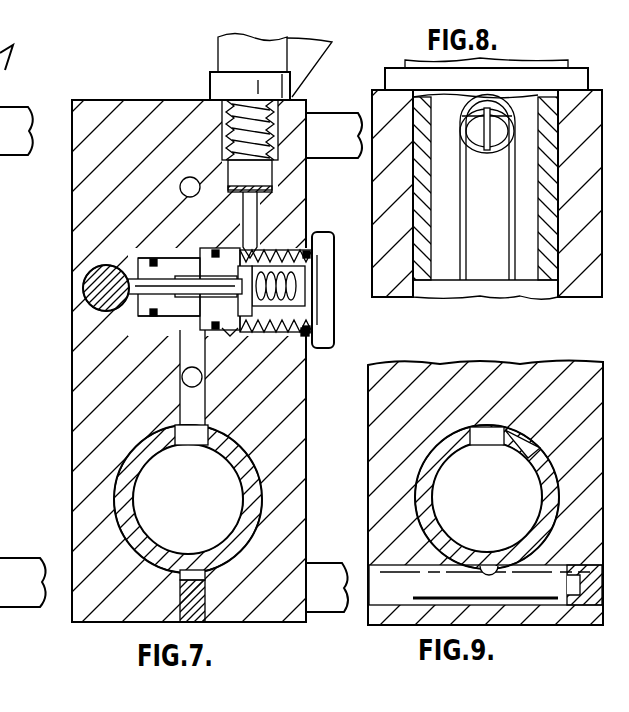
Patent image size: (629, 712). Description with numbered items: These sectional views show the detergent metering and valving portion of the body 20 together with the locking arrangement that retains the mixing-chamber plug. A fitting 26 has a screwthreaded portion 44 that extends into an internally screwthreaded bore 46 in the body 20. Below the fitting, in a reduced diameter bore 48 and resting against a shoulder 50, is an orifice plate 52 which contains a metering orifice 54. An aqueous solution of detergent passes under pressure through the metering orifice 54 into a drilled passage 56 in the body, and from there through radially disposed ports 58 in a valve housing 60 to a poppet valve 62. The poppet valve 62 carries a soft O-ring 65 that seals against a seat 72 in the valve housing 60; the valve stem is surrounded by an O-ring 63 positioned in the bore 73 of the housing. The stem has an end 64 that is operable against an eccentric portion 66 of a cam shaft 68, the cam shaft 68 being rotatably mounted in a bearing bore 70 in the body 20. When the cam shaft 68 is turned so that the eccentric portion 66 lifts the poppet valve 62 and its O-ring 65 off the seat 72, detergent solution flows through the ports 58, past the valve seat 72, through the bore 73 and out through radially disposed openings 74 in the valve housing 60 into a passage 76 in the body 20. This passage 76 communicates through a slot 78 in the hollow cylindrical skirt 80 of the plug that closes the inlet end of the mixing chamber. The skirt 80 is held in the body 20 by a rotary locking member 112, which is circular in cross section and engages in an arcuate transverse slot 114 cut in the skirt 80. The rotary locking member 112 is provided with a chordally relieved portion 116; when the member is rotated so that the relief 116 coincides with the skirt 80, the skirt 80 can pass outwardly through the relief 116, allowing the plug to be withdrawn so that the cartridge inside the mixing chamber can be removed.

In FIG. 7, the body 20 is at (70, 379).
In FIG. 8, the body 20 is at (530, 287).
In FIG. 7, the fitting 26 is at (212, 83).
In FIG. 7, the screwthreaded portion 44 is at (228, 132).
In FIG. 7, the internally screwthreaded bore 46 is at (270, 152).
In FIG. 7, the reduced diameter bore 48 is at (272, 184).
In FIG. 7, the shoulder 50 is at (215, 230).
In FIG. 7, the orifice plate 52 is at (258, 215).
In FIG. 7, the metering orifice 54 is at (232, 250).
In FIG. 7, the drilled passage 56 is at (252, 266).
In FIG. 7, the ports 58 is at (260, 335).
In FIG. 7, the valve housing 60 is at (328, 334).
In FIG. 7, the poppet valve 62 is at (232, 336).
In FIG. 7, the O-ring 63 is at (172, 318).
In FIG. 7, the end 64 is at (178, 279).
In FIG. 7, the soft O-ring 65 is at (306, 340).
In FIG. 7, the eccentric portion 66 is at (96, 306).
In FIG. 7, the cam shaft 68 is at (88, 296).
In FIG. 7, the bearing bore 70 is at (92, 270).
In FIG. 7, the seat 72 is at (200, 258).
In FIG. 7, the bore 73 is at (326, 280).
In FIG. 7, the radially disposed openings 74 is at (178, 315).
In FIG. 7, the passage 76 is at (208, 420).
In FIG. 7, the slot 78 is at (190, 440).
In FIG. 9, the slot 78 is at (488, 432).
In FIG. 7, the skirt 80 is at (132, 462).
In FIG. 9, the skirt 80 is at (516, 440).
In FIG. 9, the rotary locking member 112 is at (362, 614).
In FIG. 9, the transverse slot 114 is at (496, 566).
In FIG. 9, the chordally relieved portion 116 is at (516, 604).